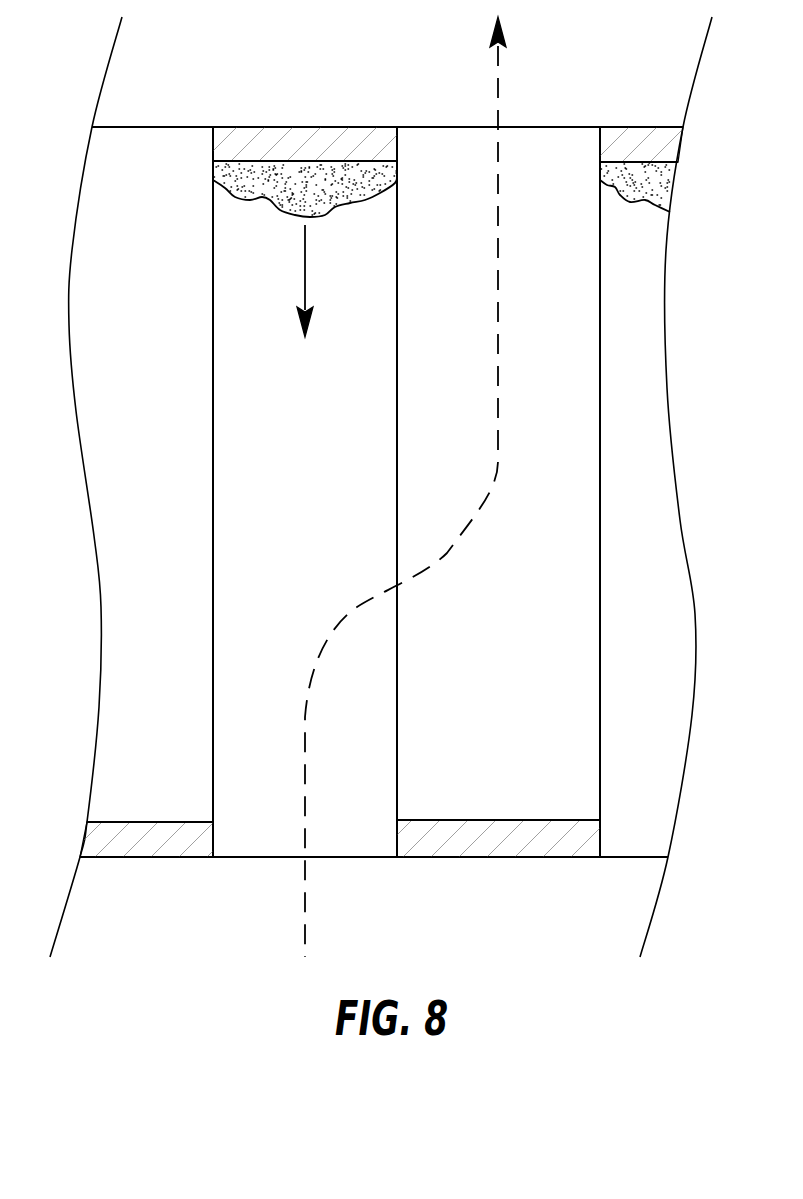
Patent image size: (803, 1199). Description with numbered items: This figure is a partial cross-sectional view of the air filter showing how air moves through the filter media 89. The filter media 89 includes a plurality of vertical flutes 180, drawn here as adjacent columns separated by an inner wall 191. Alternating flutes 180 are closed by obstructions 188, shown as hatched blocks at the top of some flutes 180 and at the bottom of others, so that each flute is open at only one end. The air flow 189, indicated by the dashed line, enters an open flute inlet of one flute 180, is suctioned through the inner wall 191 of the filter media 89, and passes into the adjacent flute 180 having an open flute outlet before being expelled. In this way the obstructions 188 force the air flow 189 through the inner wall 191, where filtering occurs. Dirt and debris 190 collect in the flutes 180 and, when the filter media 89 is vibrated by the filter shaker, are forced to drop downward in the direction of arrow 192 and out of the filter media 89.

The filter media 89 is at (219, 113).
The vertical flutes 180 is at (164, 449).
The obstruction 188 is at (343, 133).
The air flow 189 is at (471, 521).
The dirt and debris 190 is at (270, 203).
The inner wall 191 is at (397, 490).
The arrow 192 is at (307, 270).